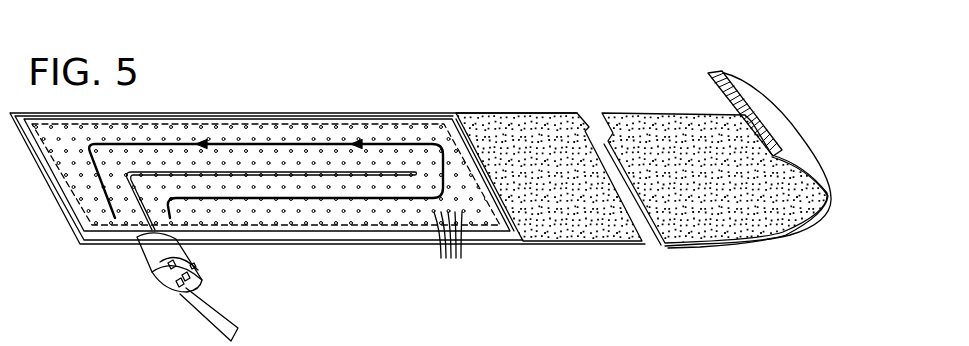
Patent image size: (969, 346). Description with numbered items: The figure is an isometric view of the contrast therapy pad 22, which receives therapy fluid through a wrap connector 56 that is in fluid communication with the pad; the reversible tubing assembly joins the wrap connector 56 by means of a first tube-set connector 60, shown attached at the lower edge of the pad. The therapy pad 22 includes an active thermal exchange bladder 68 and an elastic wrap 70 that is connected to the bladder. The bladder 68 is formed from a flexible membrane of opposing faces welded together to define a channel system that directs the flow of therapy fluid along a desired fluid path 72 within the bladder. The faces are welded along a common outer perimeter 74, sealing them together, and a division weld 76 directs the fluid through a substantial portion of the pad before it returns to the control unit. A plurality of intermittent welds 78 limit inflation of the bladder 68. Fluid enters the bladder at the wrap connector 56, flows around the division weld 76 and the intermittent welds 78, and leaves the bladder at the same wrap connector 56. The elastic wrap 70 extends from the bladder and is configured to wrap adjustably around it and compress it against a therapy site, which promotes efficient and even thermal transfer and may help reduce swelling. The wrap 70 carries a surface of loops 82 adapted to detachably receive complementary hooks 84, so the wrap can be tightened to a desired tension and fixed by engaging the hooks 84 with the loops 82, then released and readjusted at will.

The therapy pad 22 is at (302, 96).
The wrap connector 56 is at (137, 252).
The first tube-set connector 60 is at (205, 274).
The active thermal exchange bladder 68 is at (222, 125).
The elastic wrap 70 is at (540, 130).
The fluid path 72 is at (397, 142).
The common outer perimeter 74 is at (335, 115).
The division weld 76 is at (263, 168).
The intermittent welds 78 is at (450, 249).
The surface of loops 82 is at (685, 120).
The hooks 84 is at (728, 82).